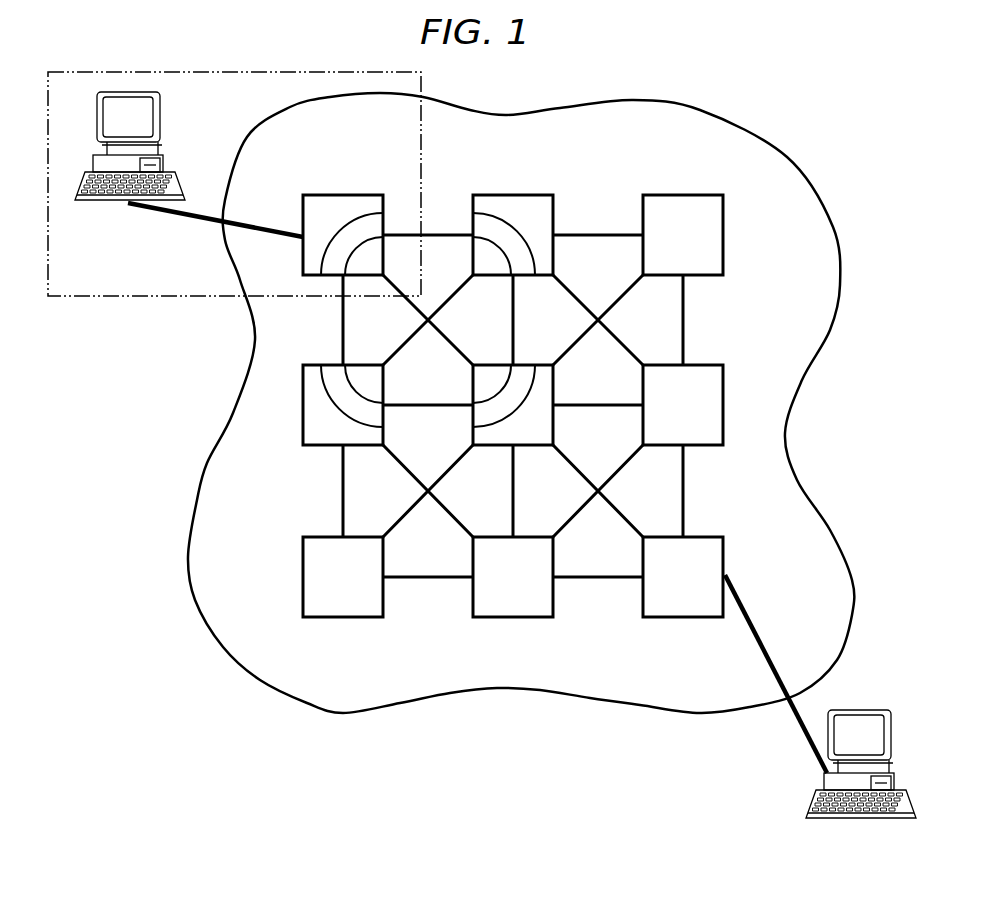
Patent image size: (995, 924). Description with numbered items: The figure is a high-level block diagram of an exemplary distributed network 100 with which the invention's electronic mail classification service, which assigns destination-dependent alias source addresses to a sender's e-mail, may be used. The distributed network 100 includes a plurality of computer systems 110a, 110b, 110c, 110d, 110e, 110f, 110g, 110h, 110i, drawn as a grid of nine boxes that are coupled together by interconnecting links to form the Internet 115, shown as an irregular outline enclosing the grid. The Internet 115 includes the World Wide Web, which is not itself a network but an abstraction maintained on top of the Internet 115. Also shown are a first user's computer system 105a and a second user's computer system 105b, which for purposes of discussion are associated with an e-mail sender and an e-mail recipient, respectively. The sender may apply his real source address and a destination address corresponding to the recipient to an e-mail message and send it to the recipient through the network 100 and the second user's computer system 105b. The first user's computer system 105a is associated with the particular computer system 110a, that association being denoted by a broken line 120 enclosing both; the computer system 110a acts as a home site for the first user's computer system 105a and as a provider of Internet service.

The distributed network 100 is at (802, 124).
The first user's computer system 105a is at (98, 205).
The second user's computer system 105b is at (828, 822).
The computer system 110a is at (363, 195).
The computer system 110b is at (535, 195).
The computer system 110c is at (703, 195).
The computer system 110d is at (383, 384).
The computer system 110e is at (553, 384).
The computer system 110f is at (723, 380).
The computer system 110g is at (362, 617).
The computer system 110h is at (533, 617).
The computer system 110i is at (705, 617).
The Internet 115 is at (197, 500).
The broken line 120 is at (122, 296).